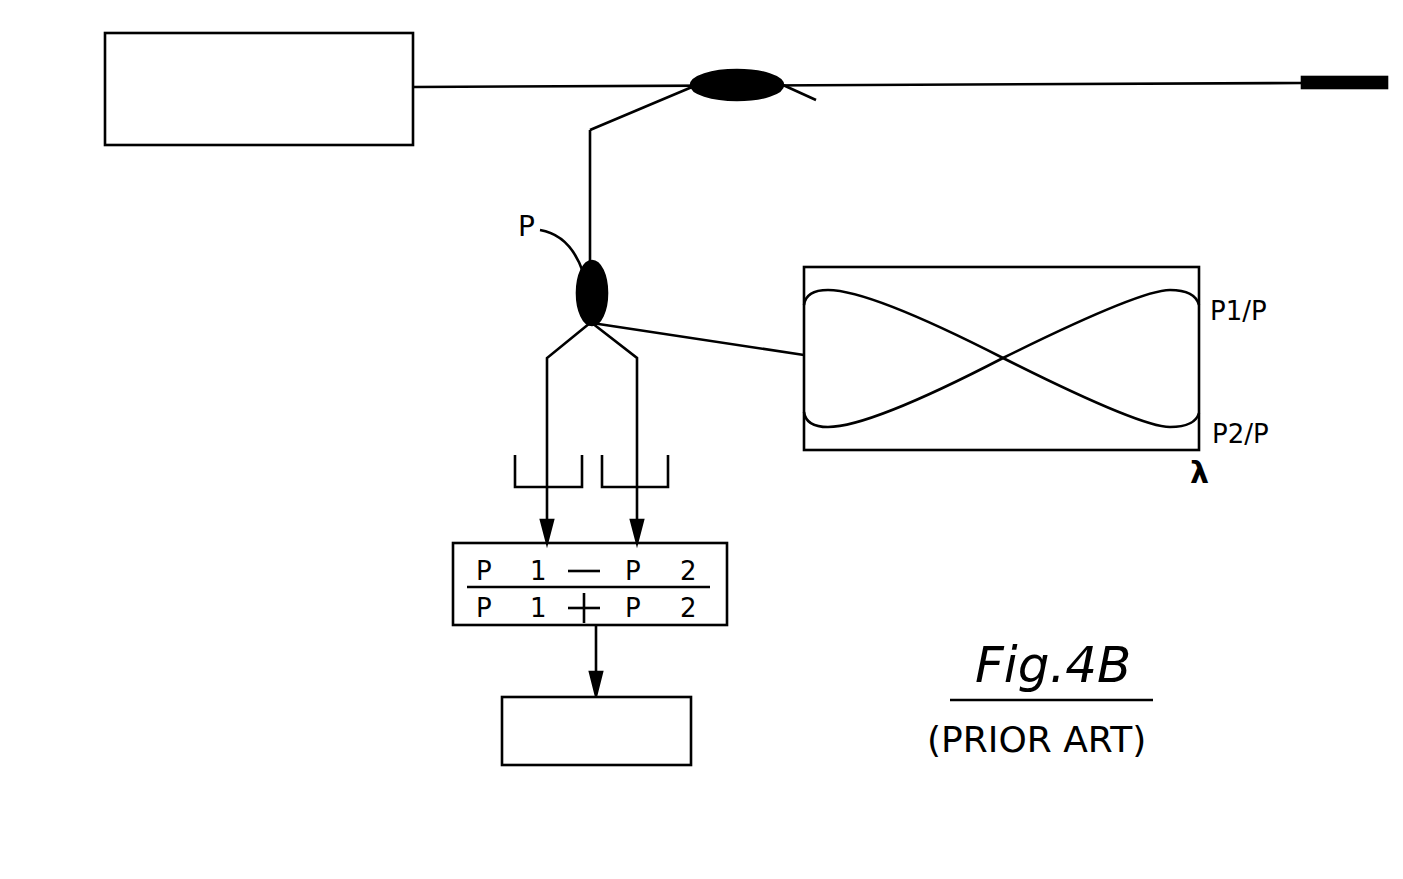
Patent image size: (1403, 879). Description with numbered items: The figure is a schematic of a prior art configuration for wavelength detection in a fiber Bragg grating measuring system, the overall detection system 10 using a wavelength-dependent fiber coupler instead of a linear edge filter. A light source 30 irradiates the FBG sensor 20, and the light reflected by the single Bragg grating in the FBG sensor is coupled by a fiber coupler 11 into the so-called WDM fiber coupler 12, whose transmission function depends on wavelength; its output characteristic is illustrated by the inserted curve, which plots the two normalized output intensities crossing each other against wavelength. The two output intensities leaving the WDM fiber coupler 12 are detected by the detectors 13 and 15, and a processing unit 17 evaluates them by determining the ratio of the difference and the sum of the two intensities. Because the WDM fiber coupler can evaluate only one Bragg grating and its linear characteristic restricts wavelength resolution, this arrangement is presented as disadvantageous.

The light source 30 is at (285, 100).
The fiber coupler 11 is at (787, 80).
The FBG sensor 20 is at (1344, 85).
The prior art FBG sensor system 10 is at (670, 290).
The WDM fiber coupler 12 is at (572, 305).
The detector 15 is at (507, 475).
The detector 13 is at (675, 478).
The signal processor / output unit 17 is at (752, 680).